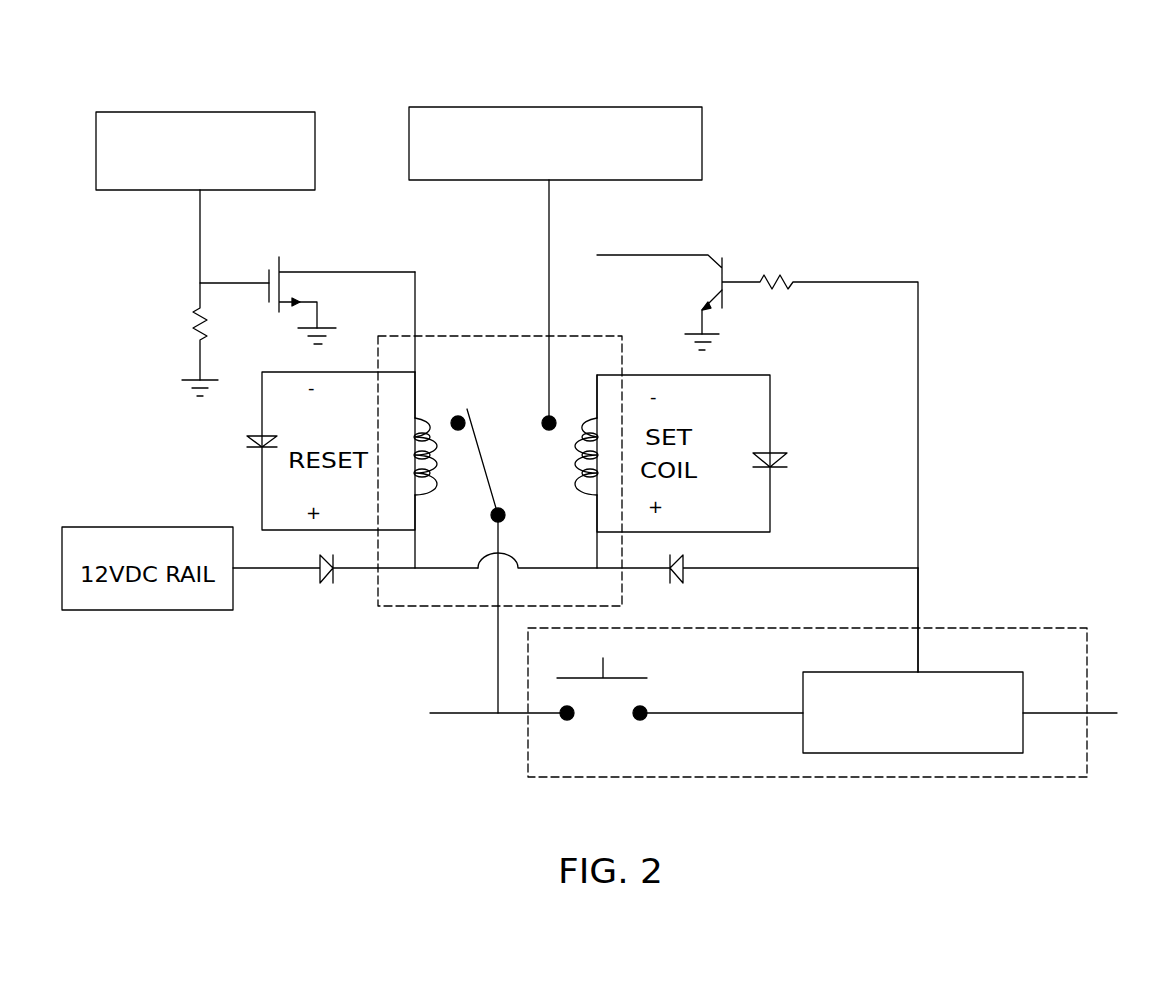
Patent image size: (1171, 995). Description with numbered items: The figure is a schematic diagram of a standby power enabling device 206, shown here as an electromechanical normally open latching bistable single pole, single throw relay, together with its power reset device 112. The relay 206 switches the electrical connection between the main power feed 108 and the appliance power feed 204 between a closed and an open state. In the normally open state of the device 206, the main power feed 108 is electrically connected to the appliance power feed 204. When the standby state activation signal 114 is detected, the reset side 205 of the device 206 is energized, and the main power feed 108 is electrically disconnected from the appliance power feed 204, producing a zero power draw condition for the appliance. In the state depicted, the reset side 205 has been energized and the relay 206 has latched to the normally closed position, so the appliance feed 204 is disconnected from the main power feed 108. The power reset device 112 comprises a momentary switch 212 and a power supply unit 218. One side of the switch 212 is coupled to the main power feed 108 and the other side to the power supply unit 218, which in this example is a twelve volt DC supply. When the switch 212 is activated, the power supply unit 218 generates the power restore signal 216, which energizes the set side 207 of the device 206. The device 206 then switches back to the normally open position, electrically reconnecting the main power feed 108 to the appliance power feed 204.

The standby state activation signal 114 is at (148, 112).
The appliance power feed 204 is at (702, 143).
The standby power enabling device 206 is at (478, 280).
The reset side 205 is at (238, 435).
The set side 207 is at (771, 399).
The power restore signal 216 is at (918, 602).
The power reset device 112 is at (841, 693).
The main power feed 108 is at (384, 700).
The momentary switch 212 is at (661, 688).
The power supply unit 218 is at (1007, 753).